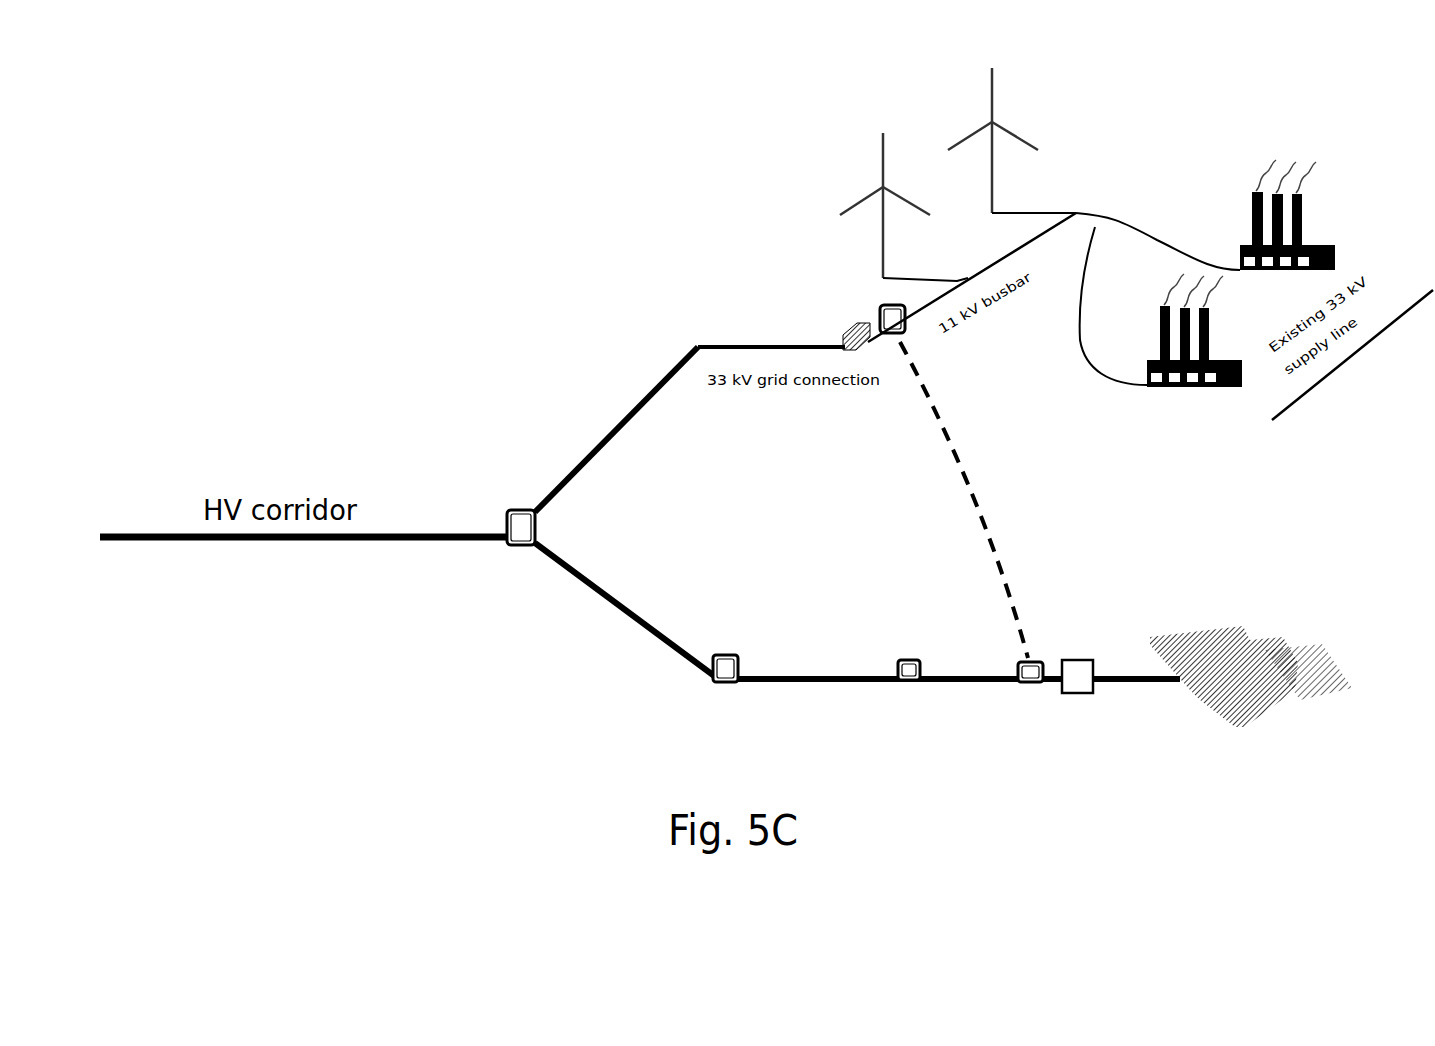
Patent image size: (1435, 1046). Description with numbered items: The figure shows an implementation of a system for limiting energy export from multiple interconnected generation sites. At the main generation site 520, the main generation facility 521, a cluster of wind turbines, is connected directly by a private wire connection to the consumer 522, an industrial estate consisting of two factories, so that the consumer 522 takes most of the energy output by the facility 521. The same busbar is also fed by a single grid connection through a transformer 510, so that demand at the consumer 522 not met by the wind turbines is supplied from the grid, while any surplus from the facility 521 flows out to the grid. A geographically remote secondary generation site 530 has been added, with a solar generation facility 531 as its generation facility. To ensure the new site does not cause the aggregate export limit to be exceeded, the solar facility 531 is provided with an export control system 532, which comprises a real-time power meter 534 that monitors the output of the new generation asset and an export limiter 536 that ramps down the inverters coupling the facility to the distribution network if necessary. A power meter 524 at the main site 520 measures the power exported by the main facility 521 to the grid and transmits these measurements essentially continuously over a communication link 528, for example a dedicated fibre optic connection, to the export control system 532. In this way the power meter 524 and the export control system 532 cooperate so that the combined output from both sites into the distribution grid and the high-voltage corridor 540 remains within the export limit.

The 33/11 kV transformer 510 is at (843, 331).
The main generation site 520 is at (796, 156).
The main generation facility 521 is at (993, 85).
The consumer 522 is at (1194, 176).
The power meter 524 is at (878, 316).
The communication link 528 is at (978, 487).
The secondary generation site 530 is at (1142, 609).
The solar generation facility 531 is at (1325, 656).
The export control system 532 is at (1059, 716).
The power meter 534 is at (1088, 694).
The export limiter 536 is at (1018, 666).
The high-voltage corridor 540 is at (436, 536).